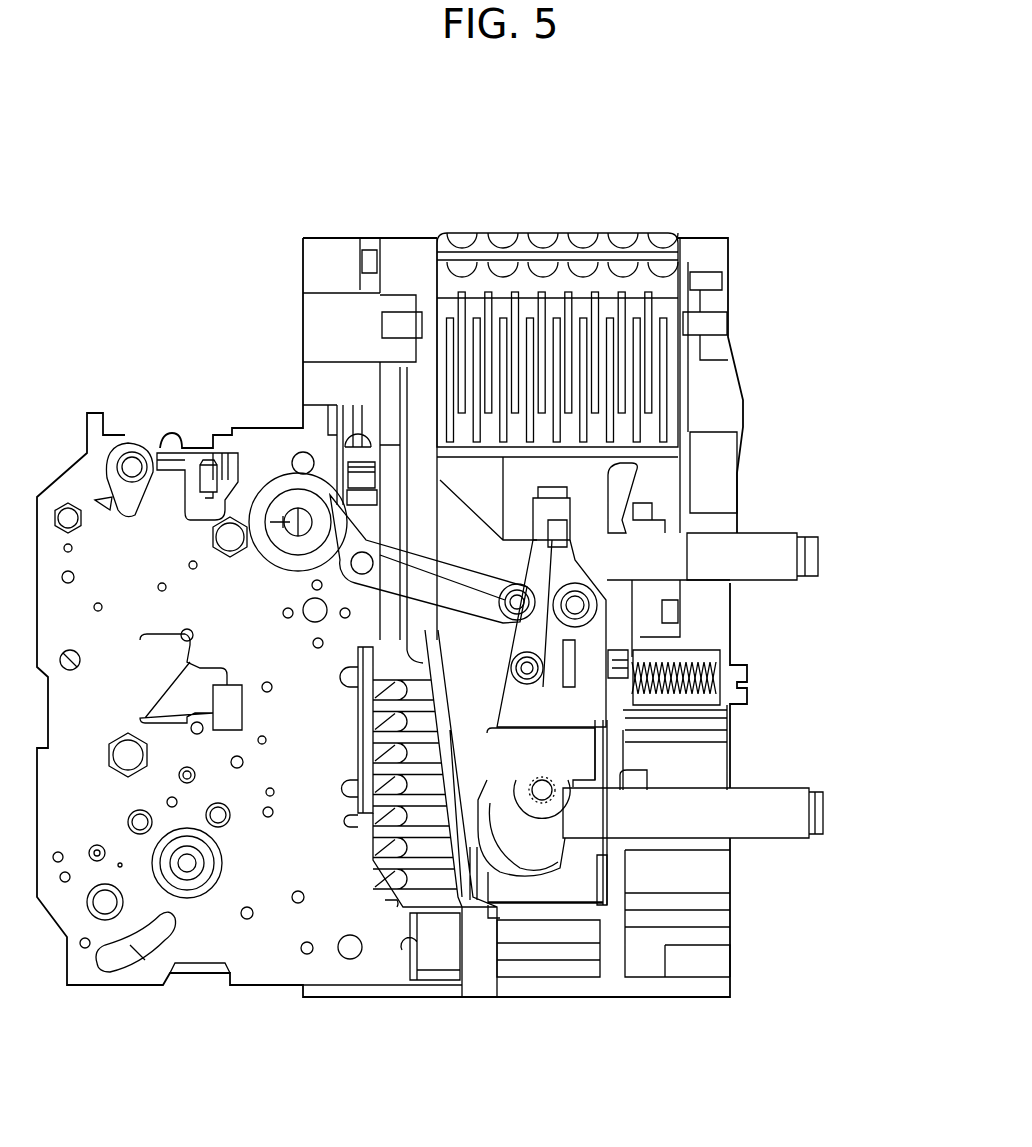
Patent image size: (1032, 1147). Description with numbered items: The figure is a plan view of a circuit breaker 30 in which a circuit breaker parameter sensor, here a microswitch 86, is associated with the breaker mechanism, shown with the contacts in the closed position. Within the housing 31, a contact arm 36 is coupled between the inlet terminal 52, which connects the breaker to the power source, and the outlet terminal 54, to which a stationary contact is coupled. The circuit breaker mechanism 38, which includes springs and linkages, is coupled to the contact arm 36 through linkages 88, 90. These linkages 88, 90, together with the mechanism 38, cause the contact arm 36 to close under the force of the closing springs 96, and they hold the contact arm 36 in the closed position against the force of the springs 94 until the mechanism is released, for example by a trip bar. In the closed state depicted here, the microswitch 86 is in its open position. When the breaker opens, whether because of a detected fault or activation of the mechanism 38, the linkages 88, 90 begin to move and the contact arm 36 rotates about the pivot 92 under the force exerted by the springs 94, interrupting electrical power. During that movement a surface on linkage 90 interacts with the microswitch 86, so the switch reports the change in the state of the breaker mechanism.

The circuit breaker 30 is at (812, 291).
The housing 31 is at (332, 238).
The contact arm 36 is at (560, 472).
The mechanism 38 is at (402, 580).
The inlet terminal 52 is at (758, 840).
The outlet terminal 54 is at (773, 533).
The microswitch 86 is at (243, 708).
The linkage 88 is at (457, 608).
The linkage 90 is at (283, 478).
The pivot 92 is at (543, 780).
The springs 94 is at (691, 665).
The closing springs 96 is at (412, 875).